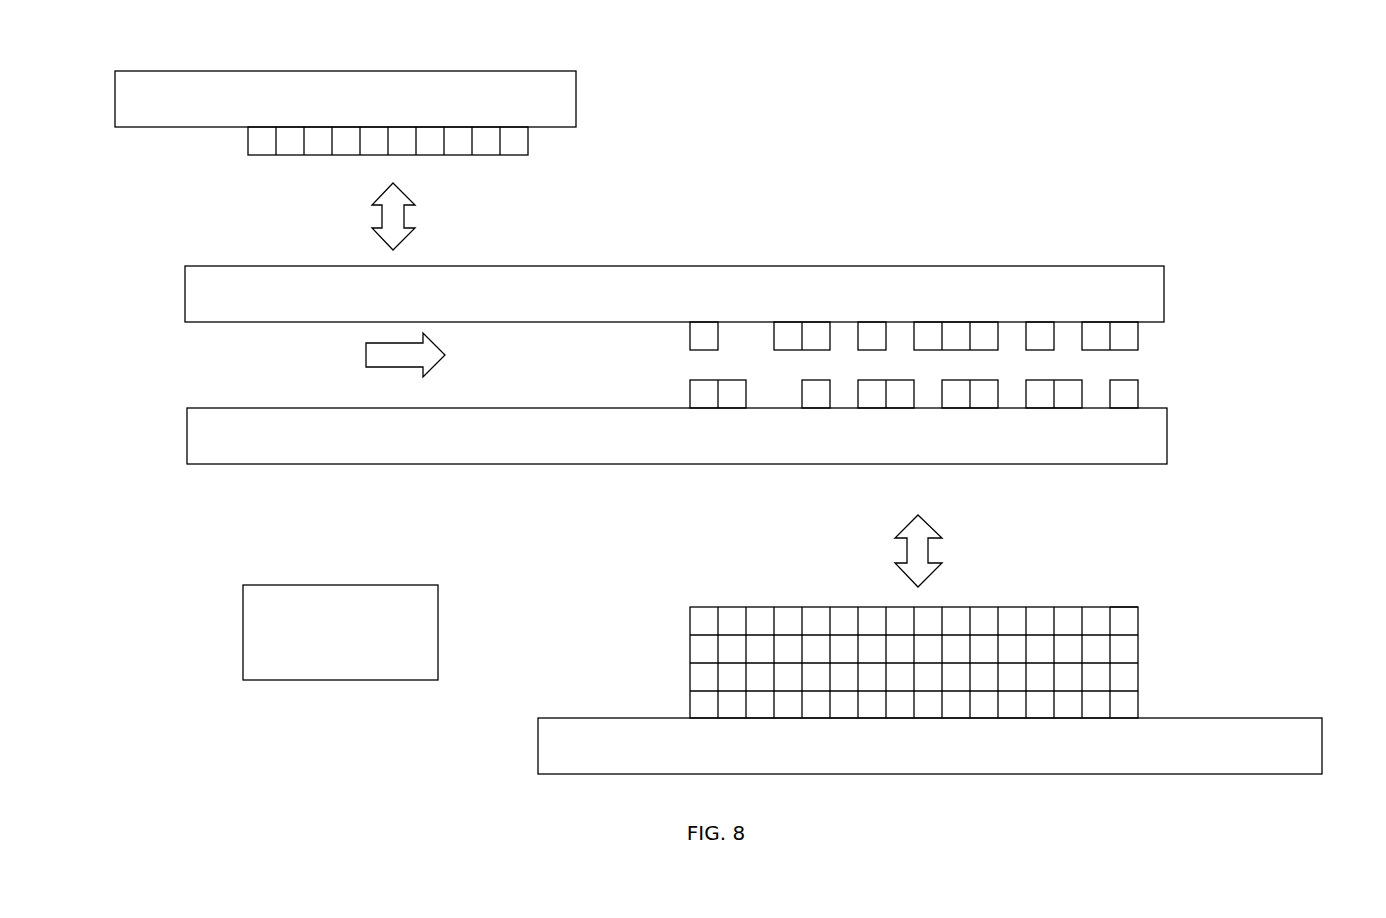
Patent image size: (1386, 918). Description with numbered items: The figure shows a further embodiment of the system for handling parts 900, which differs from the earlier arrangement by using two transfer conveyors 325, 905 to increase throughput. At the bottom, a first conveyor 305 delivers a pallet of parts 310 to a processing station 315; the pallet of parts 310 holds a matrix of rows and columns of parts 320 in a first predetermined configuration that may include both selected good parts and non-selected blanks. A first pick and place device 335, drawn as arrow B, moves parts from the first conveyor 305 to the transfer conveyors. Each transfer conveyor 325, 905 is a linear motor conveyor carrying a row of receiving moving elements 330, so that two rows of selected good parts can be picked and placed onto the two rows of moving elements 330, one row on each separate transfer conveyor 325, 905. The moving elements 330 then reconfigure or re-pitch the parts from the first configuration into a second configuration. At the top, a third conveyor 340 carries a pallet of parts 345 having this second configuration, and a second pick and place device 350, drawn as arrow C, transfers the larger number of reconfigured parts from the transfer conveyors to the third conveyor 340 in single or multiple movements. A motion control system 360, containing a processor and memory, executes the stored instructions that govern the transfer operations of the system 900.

The system for handling parts 900 is at (1004, 110).
The third conveyor 340 is at (523, 83).
The pallet of parts 345 is at (503, 183).
The second pick and place device 350 is at (397, 198).
The transfer conveyor 325 is at (1108, 267).
The moving elements 330 is at (700, 387).
The transfer conveyor 905 is at (1167, 450).
The processing station 315 is at (628, 606).
The parts 320 is at (1061, 573).
The pallet of parts 310 is at (1122, 608).
The first conveyor 305 is at (1255, 720).
The pick and place device 335 is at (918, 530).
The motion control system 360 is at (297, 682).